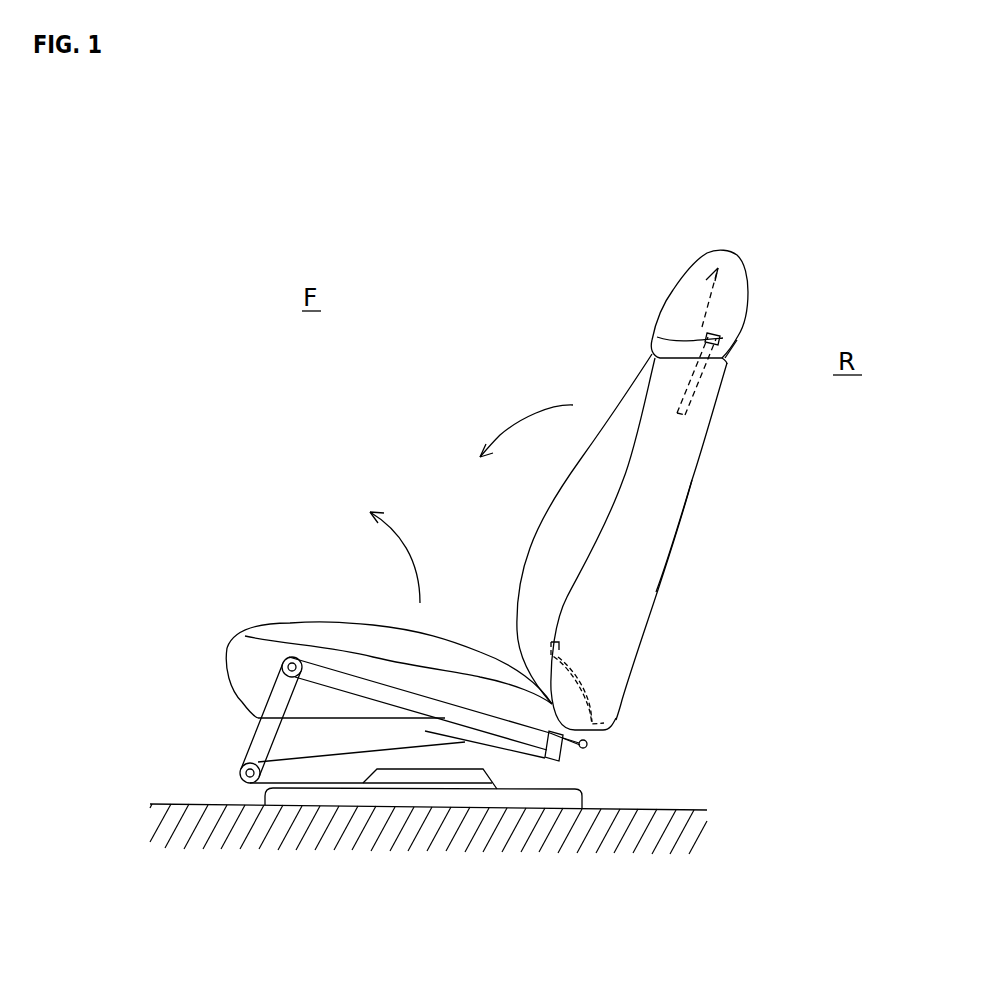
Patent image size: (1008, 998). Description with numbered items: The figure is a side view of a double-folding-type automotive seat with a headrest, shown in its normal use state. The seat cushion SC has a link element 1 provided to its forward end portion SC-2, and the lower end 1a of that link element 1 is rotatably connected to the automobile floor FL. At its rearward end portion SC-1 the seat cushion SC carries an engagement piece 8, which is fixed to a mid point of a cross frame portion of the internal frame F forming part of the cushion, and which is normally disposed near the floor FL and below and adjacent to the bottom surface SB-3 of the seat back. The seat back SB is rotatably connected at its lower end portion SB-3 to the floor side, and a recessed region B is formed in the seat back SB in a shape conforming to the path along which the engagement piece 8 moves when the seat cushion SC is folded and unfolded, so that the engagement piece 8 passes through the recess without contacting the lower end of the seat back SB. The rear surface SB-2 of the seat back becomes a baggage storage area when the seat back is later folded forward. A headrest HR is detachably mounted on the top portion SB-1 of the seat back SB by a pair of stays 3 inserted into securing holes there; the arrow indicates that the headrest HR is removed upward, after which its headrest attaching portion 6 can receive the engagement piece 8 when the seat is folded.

The headrest HR is at (678, 283).
The headrest attaching portion 6 is at (657, 338).
The top portion of the seat back SB-1 is at (737, 342).
The stays 3 is at (690, 395).
The seat back SB is at (688, 493).
The rear surface of the seat back SB-2 is at (656, 592).
The recessed region B is at (570, 695).
The lower end portion of the seat back SB-3 is at (598, 728).
The engagement piece 8 is at (590, 748).
The seat cushion SC is at (310, 620).
The forward end portion of the seat cushion SC-2 is at (328, 718).
The rearward end portion of the seat cushion SC-1 is at (567, 737).
The internal frame F is at (440, 710).
The link element 1 is at (260, 734).
The lower end of the link element 1a is at (243, 768).
The floor FL is at (635, 810).